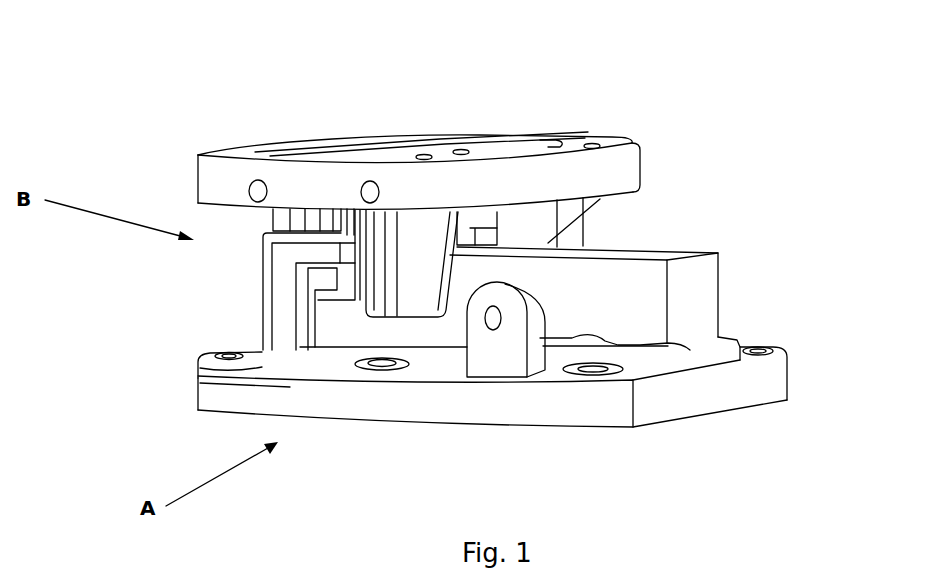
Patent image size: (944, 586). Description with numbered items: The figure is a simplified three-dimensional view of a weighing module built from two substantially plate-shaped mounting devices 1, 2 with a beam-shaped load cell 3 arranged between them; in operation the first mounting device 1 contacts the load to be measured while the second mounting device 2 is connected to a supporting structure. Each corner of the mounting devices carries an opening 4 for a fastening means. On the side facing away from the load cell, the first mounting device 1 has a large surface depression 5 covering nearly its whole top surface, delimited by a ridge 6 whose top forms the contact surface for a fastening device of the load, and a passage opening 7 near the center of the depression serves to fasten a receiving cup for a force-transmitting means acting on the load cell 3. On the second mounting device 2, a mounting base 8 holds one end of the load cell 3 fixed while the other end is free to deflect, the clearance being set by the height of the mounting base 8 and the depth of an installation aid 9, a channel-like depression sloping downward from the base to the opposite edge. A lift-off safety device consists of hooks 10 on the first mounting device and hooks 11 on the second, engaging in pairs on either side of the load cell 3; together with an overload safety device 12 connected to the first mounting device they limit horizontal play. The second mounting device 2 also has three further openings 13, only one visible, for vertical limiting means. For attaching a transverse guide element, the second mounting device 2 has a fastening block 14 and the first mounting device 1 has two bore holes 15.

The first mounting device 1 is at (607, 172).
The second mounting device 2 is at (445, 388).
The load cell 3 is at (680, 298).
The opening 4 is at (223, 355).
The surface depression 5 is at (463, 150).
The ridge 6 is at (527, 137).
The passage opening 7 is at (426, 155).
The mounting base 8 is at (698, 375).
The installation aid 9 is at (380, 345).
The hooks 10 is at (392, 258).
The hooks 11 is at (283, 282).
The overload safety device 12 is at (277, 221).
The openings 13 is at (380, 366).
The fastening block 14 is at (498, 358).
The bore holes 15 is at (364, 185).